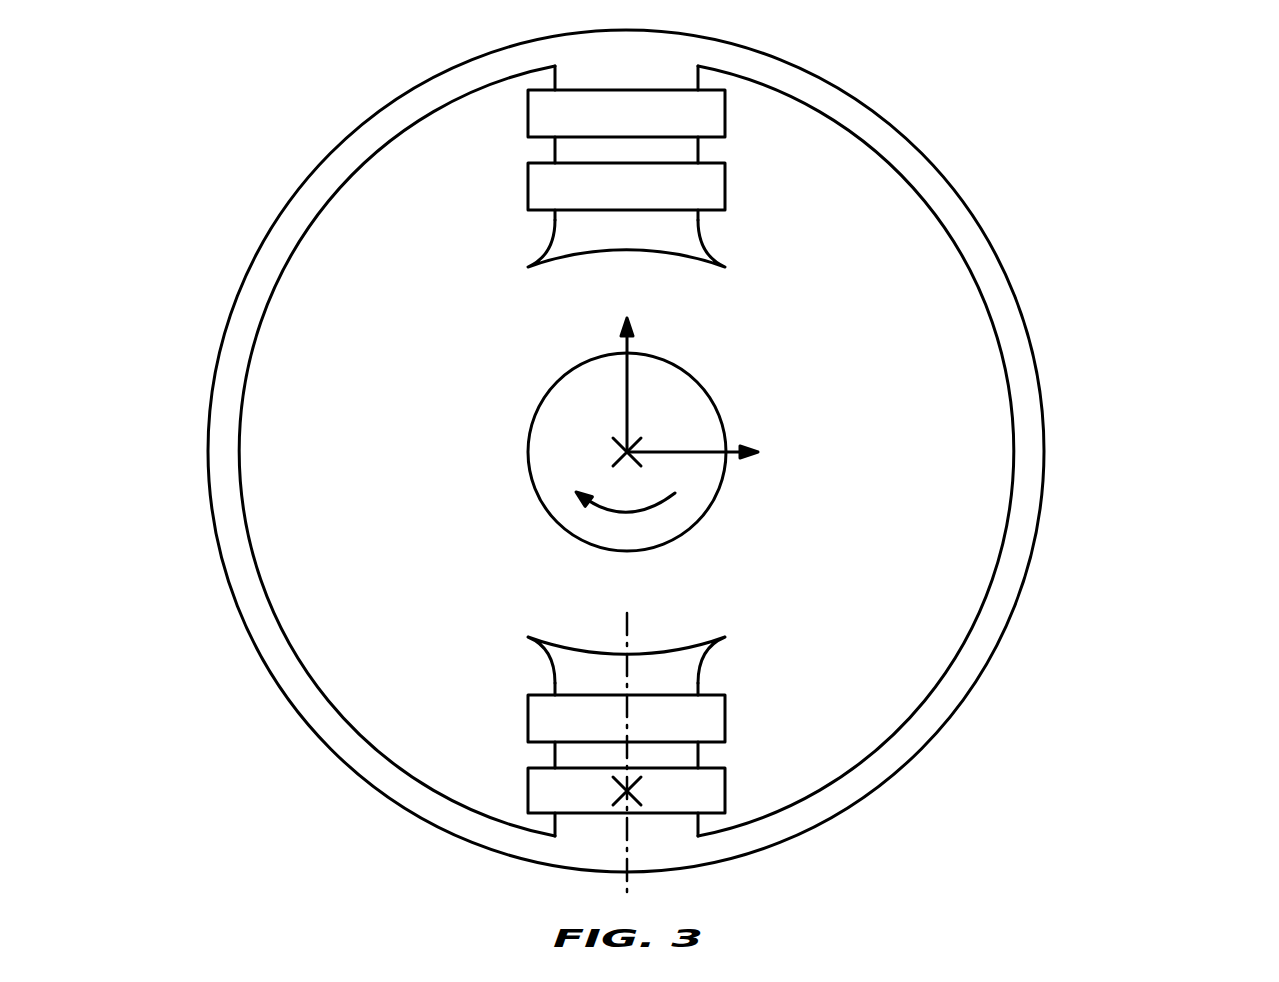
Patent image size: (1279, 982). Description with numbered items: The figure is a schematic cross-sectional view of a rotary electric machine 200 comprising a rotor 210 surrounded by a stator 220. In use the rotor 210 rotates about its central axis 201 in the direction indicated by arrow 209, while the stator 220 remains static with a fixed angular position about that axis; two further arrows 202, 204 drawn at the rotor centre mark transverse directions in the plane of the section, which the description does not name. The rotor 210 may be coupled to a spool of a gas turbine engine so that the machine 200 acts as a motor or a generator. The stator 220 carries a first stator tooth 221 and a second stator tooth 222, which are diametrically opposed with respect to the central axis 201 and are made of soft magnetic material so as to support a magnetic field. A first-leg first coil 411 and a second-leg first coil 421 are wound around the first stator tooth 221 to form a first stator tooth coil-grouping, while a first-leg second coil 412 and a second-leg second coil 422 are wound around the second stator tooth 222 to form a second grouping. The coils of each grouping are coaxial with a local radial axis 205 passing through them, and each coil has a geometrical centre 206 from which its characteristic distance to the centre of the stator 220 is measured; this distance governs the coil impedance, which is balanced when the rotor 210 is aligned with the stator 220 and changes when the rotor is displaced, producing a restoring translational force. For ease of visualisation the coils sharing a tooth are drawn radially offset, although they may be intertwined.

The rotary electric machine 200 is at (1192, 115).
The central axis 201 is at (625, 453).
The first direction 202 is at (624, 340).
The second direction 204 is at (732, 454).
The local radial axis 205 is at (623, 630).
The geometrical centre 206 is at (630, 792).
The arrow 209 is at (610, 512).
The rotor 210 is at (643, 407).
The stator 220 is at (274, 687).
The first stator tooth 221 is at (593, 233).
The second stator tooth 222 is at (707, 652).
The first-leg first coil 411 is at (540, 187).
The first-leg second coil 412 is at (538, 717).
The second-leg first coil 421 is at (697, 110).
The second-leg second coil 422 is at (710, 793).